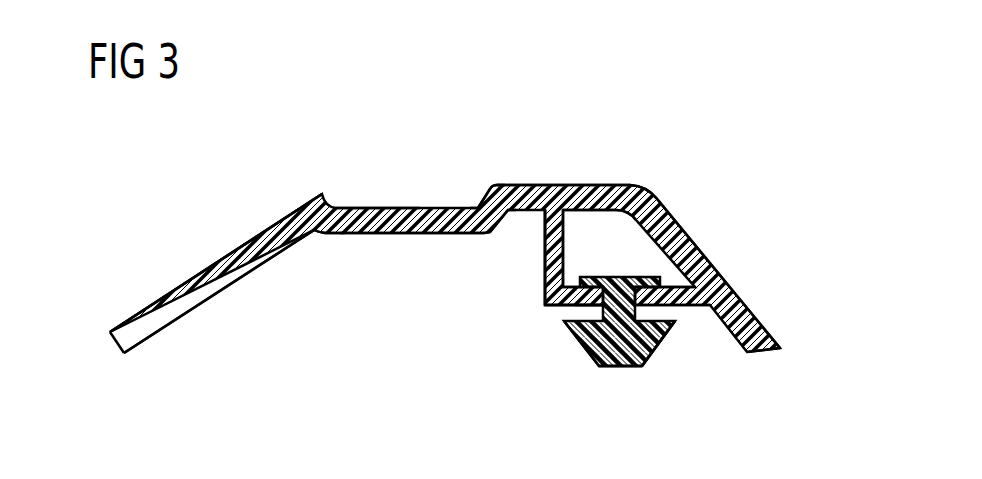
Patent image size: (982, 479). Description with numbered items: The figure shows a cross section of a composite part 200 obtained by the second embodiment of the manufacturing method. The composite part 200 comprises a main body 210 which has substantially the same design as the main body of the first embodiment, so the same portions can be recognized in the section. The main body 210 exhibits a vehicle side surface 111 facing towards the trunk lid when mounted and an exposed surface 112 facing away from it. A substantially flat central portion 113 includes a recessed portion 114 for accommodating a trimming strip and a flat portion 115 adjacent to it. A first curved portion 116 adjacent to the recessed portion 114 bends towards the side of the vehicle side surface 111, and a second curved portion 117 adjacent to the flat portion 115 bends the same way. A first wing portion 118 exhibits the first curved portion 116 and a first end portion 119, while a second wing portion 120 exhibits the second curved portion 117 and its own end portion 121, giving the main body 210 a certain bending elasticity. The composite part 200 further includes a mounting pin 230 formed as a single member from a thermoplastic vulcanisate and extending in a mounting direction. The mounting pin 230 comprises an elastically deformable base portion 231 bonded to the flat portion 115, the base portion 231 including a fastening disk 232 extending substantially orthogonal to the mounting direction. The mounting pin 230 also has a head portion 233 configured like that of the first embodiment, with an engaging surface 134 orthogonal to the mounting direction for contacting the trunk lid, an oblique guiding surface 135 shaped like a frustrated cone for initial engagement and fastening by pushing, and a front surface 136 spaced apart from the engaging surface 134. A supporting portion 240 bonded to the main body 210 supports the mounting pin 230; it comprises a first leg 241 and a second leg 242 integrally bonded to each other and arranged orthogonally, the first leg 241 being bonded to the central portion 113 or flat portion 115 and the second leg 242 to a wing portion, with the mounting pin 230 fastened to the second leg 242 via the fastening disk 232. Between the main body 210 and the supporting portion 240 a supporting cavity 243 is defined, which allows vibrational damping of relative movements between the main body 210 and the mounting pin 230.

The composite part 200 is at (440, 131).
The vehicle side surface 111 is at (227, 293).
The exposed surface 112 is at (372, 202).
The central portion 113 is at (460, 199).
The recessed portion 114 is at (401, 213).
The flat portion 115 is at (548, 192).
The first curved portion 116 is at (313, 233).
The second curved portion 117 is at (657, 195).
The first wing portion 118 is at (187, 290).
The first end portion 119 is at (123, 354).
The second wing portion 120 is at (735, 283).
The leg end 121 is at (777, 354).
The engaging surface 134 is at (580, 312).
The guiding surface 135 is at (663, 348).
The front surface 136 is at (630, 368).
The main body 210 is at (267, 238).
The mounting pin 230 is at (588, 377).
The base portion 231 is at (658, 345).
The fastening disk 232 is at (628, 278).
The head portion 233 is at (610, 367).
The supporting portion 240 is at (503, 292).
The first leg 241 is at (545, 253).
The second leg 242 is at (592, 313).
The supporting cavity 243 is at (613, 228).